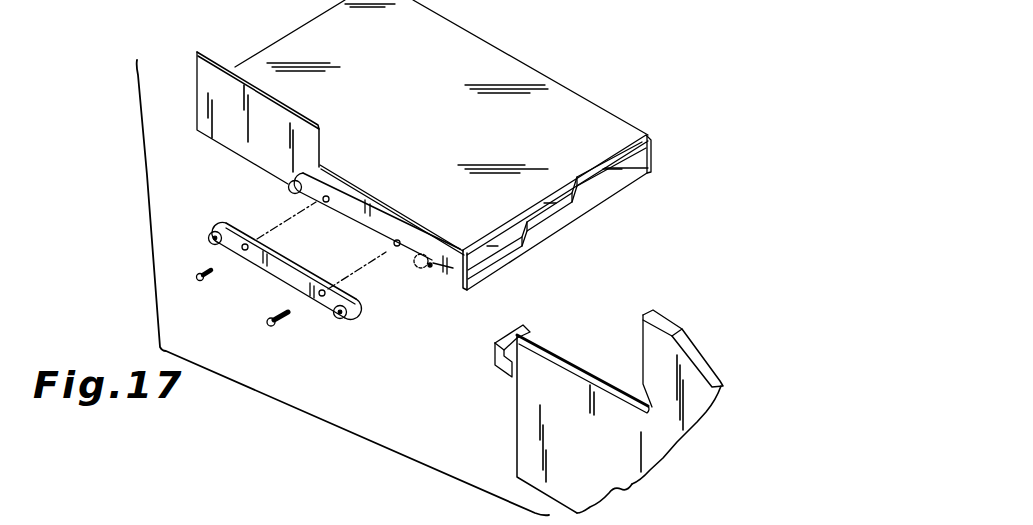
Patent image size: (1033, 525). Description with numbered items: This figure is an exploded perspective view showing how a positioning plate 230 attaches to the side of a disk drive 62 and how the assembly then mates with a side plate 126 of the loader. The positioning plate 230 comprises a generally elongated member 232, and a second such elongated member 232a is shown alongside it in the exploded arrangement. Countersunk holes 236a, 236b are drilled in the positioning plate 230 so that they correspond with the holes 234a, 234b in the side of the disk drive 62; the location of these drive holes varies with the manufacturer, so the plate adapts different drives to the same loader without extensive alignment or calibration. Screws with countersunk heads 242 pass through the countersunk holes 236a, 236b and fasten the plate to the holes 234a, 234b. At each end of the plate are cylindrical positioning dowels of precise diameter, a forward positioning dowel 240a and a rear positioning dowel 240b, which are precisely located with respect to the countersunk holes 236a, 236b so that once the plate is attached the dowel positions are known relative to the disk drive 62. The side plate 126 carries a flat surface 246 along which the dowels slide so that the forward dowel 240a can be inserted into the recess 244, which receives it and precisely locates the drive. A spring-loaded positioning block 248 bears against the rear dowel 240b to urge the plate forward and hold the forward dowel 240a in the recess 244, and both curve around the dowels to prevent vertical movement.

The disk drive 62 is at (557, 100).
The side plate 126 is at (624, 478).
The positioning plate 230 is at (357, 222).
The elongated member 232 is at (388, 211).
The elongated member 232a is at (308, 291).
The hole in disk drive 234a is at (332, 196).
The hole in disk drive 234b is at (402, 240).
The countersunk hole 236a is at (245, 251).
The countersunk hole 236b is at (352, 287).
The forward positioning dowel 240a is at (468, 272).
The rear positioning dowel 240b is at (210, 232).
The screw with countersunk head 242 is at (267, 323).
The recess 244 is at (642, 408).
The flat surface 246 is at (577, 352).
The positioning block 248 is at (497, 377).